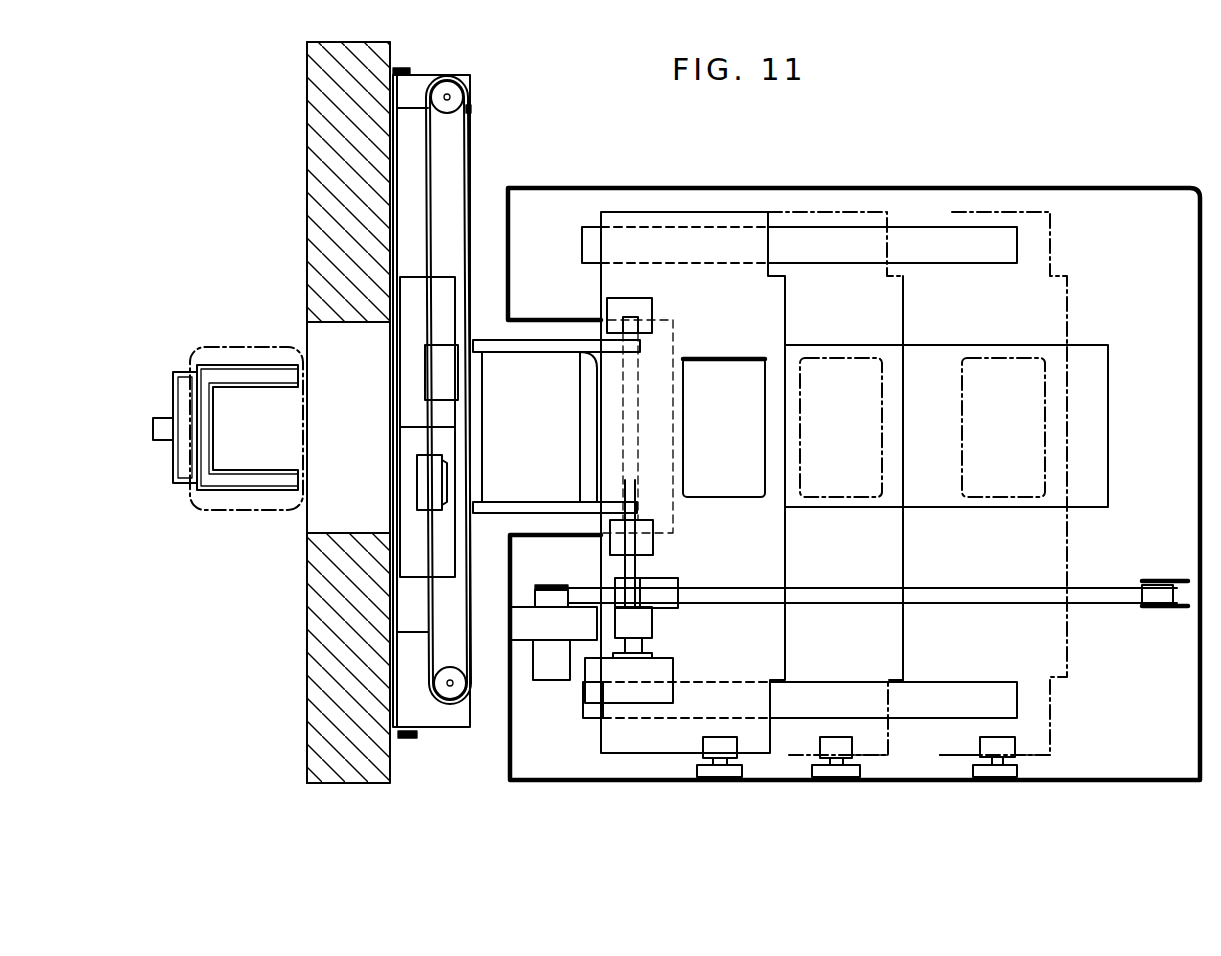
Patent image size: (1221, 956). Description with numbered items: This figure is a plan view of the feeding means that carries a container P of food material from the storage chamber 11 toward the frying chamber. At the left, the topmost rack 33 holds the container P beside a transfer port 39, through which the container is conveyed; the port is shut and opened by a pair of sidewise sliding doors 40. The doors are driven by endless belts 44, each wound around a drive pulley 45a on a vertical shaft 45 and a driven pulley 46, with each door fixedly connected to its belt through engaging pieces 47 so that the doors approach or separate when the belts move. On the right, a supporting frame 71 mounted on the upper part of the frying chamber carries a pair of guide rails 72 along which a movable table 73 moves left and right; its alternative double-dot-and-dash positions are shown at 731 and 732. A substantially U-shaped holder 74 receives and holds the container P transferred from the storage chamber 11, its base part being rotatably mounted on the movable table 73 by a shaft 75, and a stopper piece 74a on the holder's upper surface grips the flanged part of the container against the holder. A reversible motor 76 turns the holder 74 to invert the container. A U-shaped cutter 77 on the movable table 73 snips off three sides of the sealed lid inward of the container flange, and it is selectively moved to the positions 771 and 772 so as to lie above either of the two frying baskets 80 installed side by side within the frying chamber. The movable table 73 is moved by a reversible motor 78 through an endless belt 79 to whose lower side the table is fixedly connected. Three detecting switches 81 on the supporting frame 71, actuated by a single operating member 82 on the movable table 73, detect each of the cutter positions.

The storage chamber 11 is at (278, 205).
The container P is at (210, 345).
The topmost rack 33 is at (250, 488).
The transfer port 39 is at (312, 333).
The door 40 is at (415, 338).
The endless belt 44 is at (470, 135).
The vertical shaft 45 is at (400, 200).
The drive pulley 45a is at (455, 694).
The driven pulley 46 is at (450, 92).
The engaging piece 47 is at (428, 378).
The supporting frame 71 is at (1098, 195).
The guide rail 72 is at (980, 265).
The movable table 73 is at (785, 574).
The movable table position 731 is at (903, 574).
The movable table position 732 is at (1067, 574).
The holder 74 is at (522, 500).
The stopper piece 74a is at (500, 513).
The shaft 75 is at (640, 572).
The reversible motor 76 is at (670, 667).
The cutter 77 is at (720, 498).
The cutter position 771 is at (830, 498).
The cutter position 772 is at (995, 498).
The reversible motor 78 is at (552, 672).
The endless belt 79 is at (846, 603).
The frying basket 80 is at (670, 612).
The detecting switch 81 is at (735, 772).
The operating member 82 is at (703, 745).